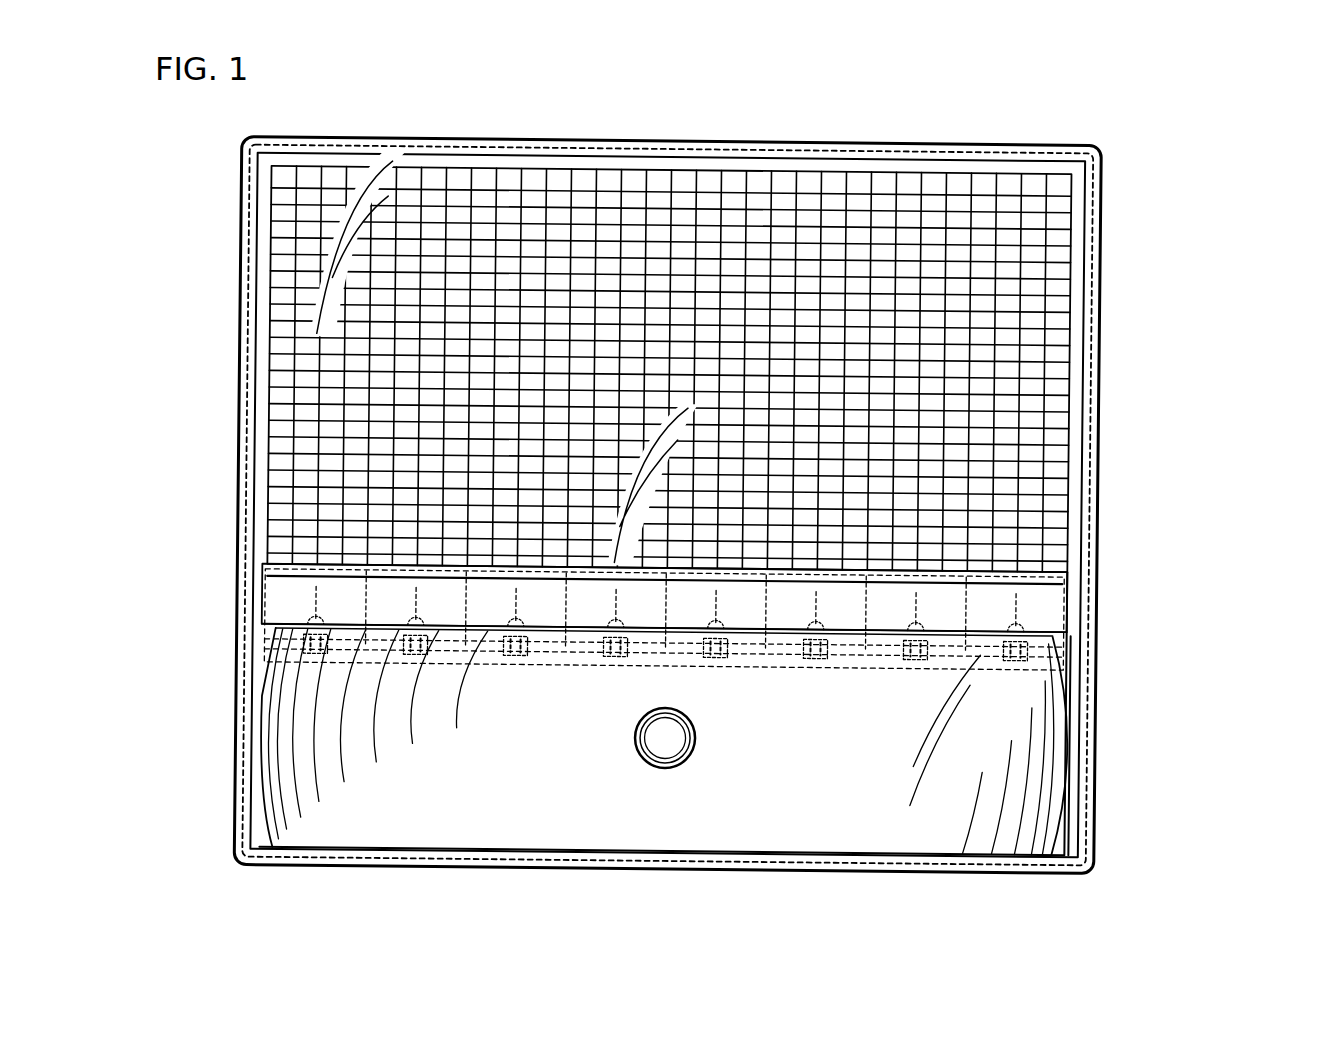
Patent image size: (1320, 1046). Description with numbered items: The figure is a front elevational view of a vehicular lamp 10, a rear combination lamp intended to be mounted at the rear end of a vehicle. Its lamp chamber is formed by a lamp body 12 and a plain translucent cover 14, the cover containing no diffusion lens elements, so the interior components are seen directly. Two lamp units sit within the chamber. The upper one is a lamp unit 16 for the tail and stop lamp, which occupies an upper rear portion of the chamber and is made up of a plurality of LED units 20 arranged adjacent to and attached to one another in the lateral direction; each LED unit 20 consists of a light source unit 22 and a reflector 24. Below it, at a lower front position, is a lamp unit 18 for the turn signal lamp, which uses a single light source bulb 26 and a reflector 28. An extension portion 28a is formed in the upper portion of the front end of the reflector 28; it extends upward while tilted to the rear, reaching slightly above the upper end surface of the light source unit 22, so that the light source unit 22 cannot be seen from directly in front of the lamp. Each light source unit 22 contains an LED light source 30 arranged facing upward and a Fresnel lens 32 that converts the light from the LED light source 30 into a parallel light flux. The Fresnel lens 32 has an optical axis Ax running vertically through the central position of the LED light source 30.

The vehicular lamp 10 is at (1152, 290).
The lamp body 12 is at (1102, 473).
The plain translucent cover 14 is at (667, 505).
The lamp unit 16 is at (1073, 385).
The lamp unit 18 is at (1075, 678).
The LED unit 20 is at (365, 410).
The light source unit 22 is at (265, 597).
The reflector 24 is at (263, 497).
The light source bulb 26 is at (673, 747).
The reflector 28 is at (268, 790).
The extension portion 28a is at (290, 603).
The LED light source 30 is at (1020, 627).
The Fresnel lens 32 is at (1020, 577).
The optical axis Ax is at (1017, 612).